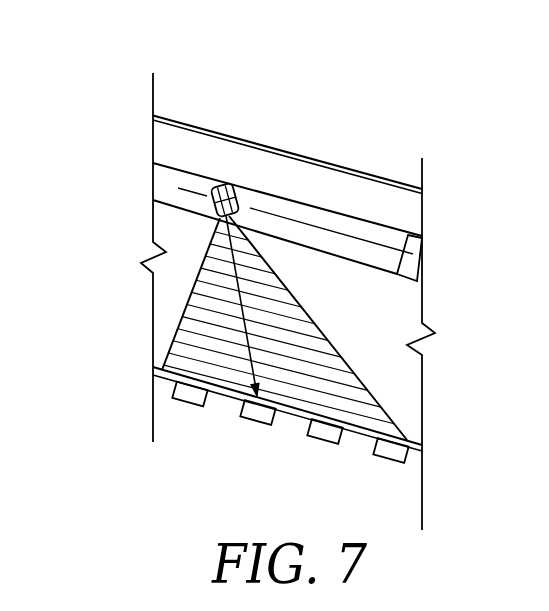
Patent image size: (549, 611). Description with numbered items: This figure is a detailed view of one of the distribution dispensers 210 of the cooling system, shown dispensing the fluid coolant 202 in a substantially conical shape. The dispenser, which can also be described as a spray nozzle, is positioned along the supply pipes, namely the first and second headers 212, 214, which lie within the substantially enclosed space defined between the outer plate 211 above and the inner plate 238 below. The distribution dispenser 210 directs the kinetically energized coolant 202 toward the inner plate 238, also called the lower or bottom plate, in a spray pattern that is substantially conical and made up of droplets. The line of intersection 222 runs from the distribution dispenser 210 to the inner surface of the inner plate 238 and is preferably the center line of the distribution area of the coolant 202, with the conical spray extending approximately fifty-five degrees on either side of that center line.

The fluid coolant 202 is at (210, 327).
The distribution dispenser 210 is at (222, 184).
The outer plate 211 is at (362, 168).
The first header 212 is at (177, 170).
The second header 214 is at (177, 170).
The line of intersection 222 is at (246, 338).
The inner plate 238 is at (162, 380).